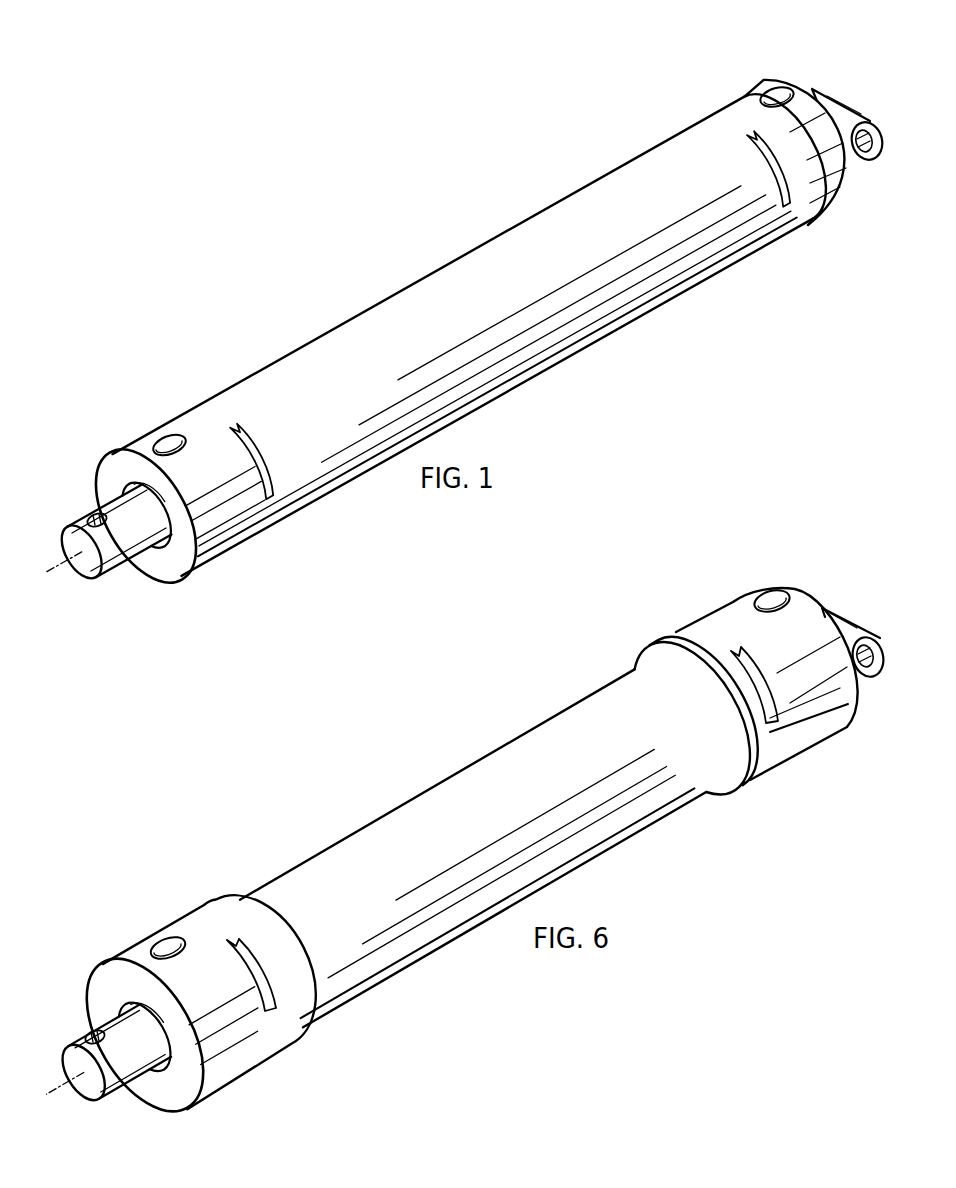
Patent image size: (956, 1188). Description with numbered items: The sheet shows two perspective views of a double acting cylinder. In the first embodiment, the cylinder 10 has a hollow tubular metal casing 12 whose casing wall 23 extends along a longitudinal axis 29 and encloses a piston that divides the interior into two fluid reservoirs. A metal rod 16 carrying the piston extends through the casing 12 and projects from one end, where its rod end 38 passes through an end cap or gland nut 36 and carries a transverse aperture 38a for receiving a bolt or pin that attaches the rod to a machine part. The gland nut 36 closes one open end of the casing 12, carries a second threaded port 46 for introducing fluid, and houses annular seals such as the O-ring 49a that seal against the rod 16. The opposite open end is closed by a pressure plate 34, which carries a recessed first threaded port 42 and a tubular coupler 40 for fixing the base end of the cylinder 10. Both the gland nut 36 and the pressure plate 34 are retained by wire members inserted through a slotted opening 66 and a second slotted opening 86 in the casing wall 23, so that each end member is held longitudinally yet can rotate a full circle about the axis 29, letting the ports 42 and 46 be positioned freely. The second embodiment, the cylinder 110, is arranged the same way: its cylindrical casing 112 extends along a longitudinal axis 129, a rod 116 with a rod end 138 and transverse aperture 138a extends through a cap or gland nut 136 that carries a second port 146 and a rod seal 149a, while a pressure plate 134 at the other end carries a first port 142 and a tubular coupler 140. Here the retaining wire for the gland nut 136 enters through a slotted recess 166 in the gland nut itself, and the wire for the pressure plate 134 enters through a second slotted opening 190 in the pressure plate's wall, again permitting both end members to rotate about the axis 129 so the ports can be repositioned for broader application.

In FIG. 1, the double acting cylinder 10 is at (566, 152).
In FIG. 1, the casing 12 is at (480, 226).
In FIG. 1, the casing wall 23 is at (405, 298).
In FIG. 1, the pressure plate 34 is at (761, 58).
In FIG. 1, the first threaded port 42 is at (778, 98).
In FIG. 1, the second slotted opening 86 is at (748, 140).
In FIG. 1, the tubular coupler 40 is at (866, 188).
In FIG. 1, the end cap or gland nut 36 is at (170, 382).
In FIG. 1, the slotted opening 66 is at (252, 442).
In FIG. 1, the second threaded port 46 is at (167, 442).
In FIG. 1, the transverse aperture 38a is at (98, 514).
In FIG. 1, the rod end 38 is at (50, 516).
In FIG. 1, the longitudinal axis 29 is at (48, 583).
In FIG. 1, the rod 16 is at (132, 566).
In FIG. 1, the annular seal or O-ring 49a is at (176, 572).
In FIG. 6, the double acting cylinder 110 is at (566, 670).
In FIG. 6, the cylindrical casing 112 is at (482, 748).
In FIG. 6, the pressure plate 134 is at (760, 570).
In FIG. 6, the first port 142 is at (778, 605).
In FIG. 6, the second slotted opening 190 is at (745, 652).
In FIG. 6, the tubular coupler 140 is at (867, 699).
In FIG. 6, the cap or gland nut 136 is at (170, 900).
In FIG. 6, the slotted recess 166 is at (255, 960).
In FIG. 6, the second port 146 is at (165, 945).
In FIG. 6, the transverse aperture 138a is at (97, 1028).
In FIG. 6, the rod end 138 is at (50, 1033).
In FIG. 6, the longitudinal axis 129 is at (47, 1096).
In FIG. 6, the rod 116 is at (125, 1080).
In FIG. 6, the seal or O-ring 149a is at (185, 1095).